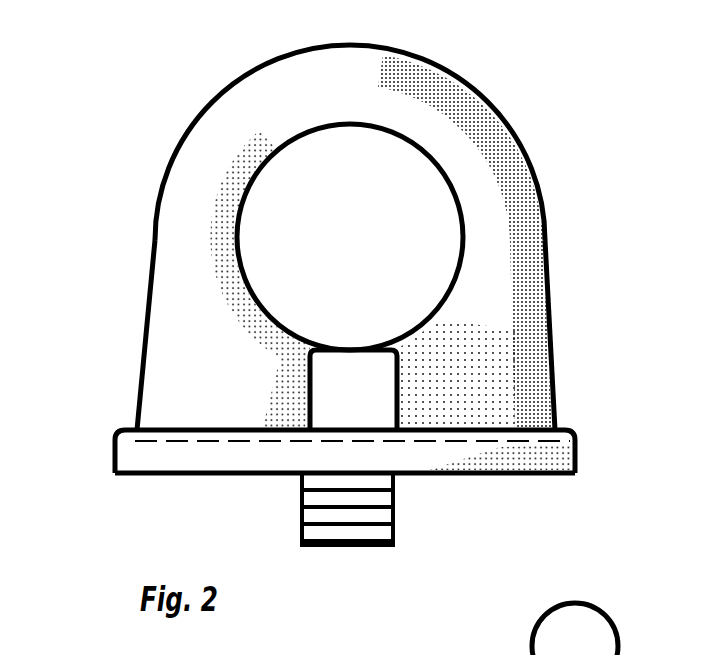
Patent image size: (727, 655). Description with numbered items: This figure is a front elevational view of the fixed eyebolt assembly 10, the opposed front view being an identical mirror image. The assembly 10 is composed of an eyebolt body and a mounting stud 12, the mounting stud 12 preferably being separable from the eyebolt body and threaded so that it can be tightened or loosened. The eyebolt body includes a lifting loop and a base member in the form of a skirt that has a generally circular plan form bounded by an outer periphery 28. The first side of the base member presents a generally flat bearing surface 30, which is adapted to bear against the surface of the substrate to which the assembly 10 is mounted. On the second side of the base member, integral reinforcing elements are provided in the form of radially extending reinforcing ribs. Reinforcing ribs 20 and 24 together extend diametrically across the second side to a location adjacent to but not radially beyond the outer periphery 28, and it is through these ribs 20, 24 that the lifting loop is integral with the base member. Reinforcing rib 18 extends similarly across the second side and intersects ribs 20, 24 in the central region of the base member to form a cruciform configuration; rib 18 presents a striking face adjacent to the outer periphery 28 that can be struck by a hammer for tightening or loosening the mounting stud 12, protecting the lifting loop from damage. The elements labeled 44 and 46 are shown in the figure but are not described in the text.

The fixed eyebolt assembly 10 is at (172, 70).
The reinforcing rib 18 is at (327, 380).
The left side face 46 is at (183, 348).
The reinforcing rib 20 is at (136, 398).
The right side face 44 is at (483, 366).
The reinforcing rib 24 is at (557, 397).
The outer periphery 28 is at (132, 458).
The bearing surface 30 is at (487, 475).
The mounting stud 12 is at (302, 516).